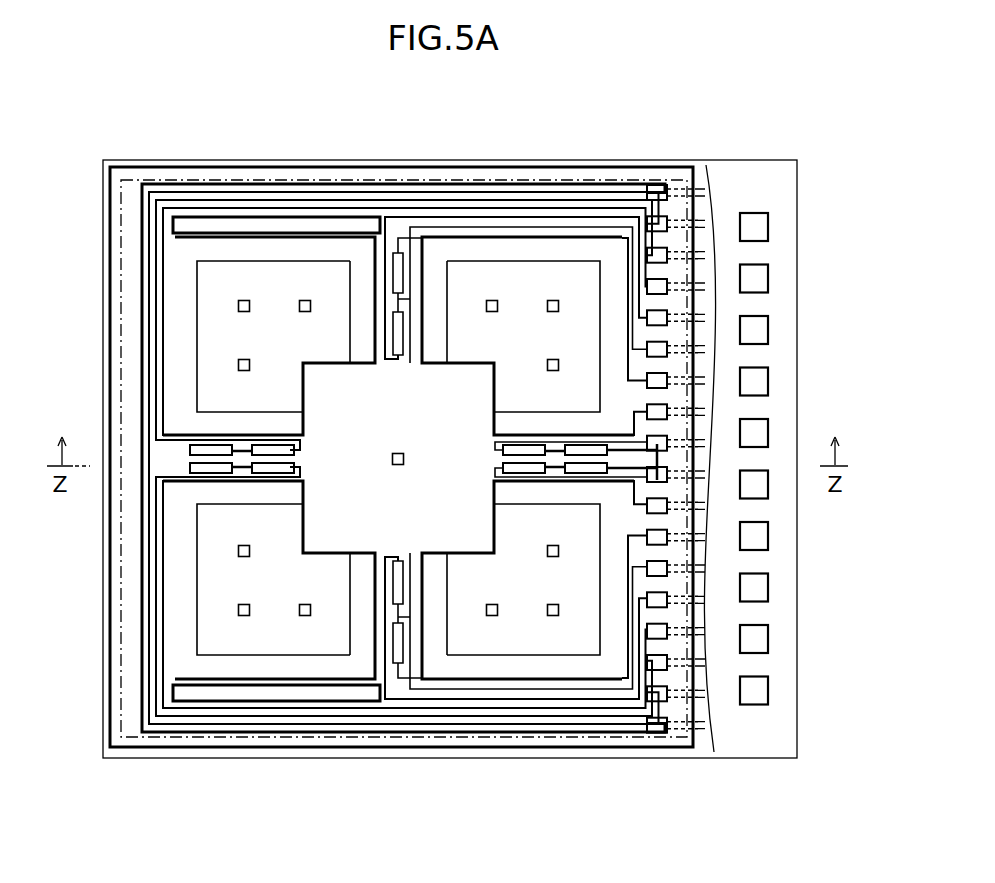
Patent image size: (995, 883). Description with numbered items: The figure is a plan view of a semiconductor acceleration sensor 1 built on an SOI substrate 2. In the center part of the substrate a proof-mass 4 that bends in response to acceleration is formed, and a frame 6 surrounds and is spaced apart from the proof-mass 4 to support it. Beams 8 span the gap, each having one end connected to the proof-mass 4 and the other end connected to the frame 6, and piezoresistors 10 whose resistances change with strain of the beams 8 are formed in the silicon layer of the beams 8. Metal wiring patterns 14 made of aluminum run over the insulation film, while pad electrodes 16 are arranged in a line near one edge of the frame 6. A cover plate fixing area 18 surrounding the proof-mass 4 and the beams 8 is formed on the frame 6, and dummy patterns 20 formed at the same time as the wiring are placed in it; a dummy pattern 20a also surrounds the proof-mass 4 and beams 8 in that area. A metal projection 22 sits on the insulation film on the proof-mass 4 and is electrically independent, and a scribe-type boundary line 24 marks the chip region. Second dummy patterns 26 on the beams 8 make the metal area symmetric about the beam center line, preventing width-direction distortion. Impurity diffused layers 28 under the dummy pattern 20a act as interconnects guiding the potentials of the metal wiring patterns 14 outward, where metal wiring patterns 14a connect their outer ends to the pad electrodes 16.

The sensor device 1 is at (817, 156).
The SOI substrate 2 is at (745, 160).
The proof-mass 4 is at (455, 412).
The frame 6 is at (778, 217).
The beams 8 is at (375, 317).
The piezoresistors 10 is at (590, 447).
The metal wiring patterns 14 is at (497, 235).
The metal wiring patterns 14a is at (703, 185).
The pad electrodes 16 is at (758, 280).
The cover plate fixing area 18 is at (363, 422).
The dummy patterns 20 is at (214, 217).
The dummy pattern 20a is at (553, 182).
The projection 22 is at (304, 300).
The scribe line 24 is at (299, 180).
The second dummy patterns 26 is at (412, 315).
The impurity diffused layers 28 is at (703, 752).